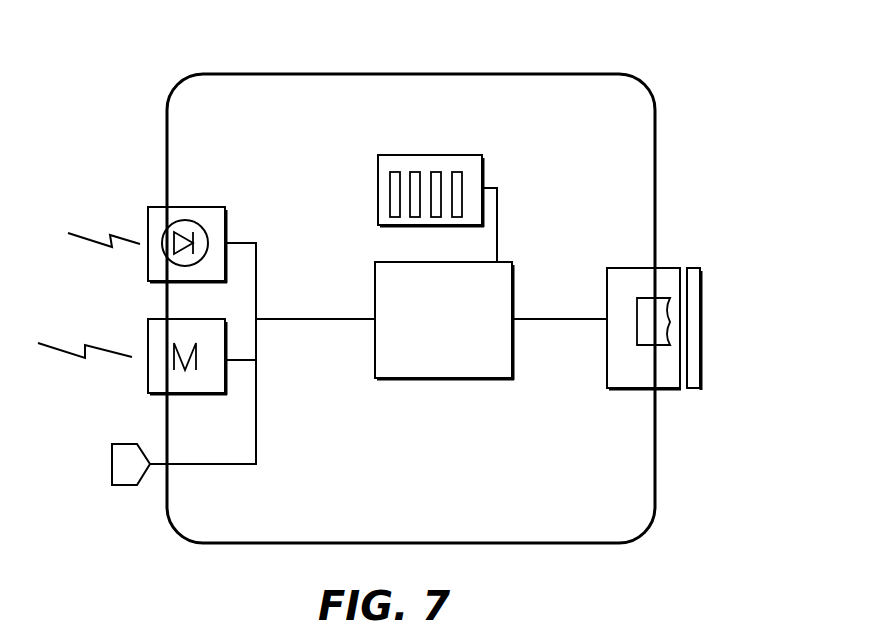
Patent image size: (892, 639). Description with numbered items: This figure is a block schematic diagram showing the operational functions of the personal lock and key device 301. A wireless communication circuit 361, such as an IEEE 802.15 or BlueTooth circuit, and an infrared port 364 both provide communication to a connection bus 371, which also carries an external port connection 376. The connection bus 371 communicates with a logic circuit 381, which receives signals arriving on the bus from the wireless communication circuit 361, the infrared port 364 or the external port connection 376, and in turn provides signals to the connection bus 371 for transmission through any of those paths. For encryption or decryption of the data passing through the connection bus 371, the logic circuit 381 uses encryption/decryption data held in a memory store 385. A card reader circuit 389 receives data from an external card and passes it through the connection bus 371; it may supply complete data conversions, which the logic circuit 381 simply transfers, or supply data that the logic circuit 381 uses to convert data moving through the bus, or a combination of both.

The personal lock and key device 301 is at (739, 30).
The wireless communication circuit 361 is at (147, 333).
The infrared port 364 is at (157, 207).
The connection bus 371 is at (256, 443).
The external port connection 376 is at (124, 486).
The logic circuit 381 is at (462, 326).
The memory store 385 is at (453, 155).
The card reader circuit 389 is at (700, 321).